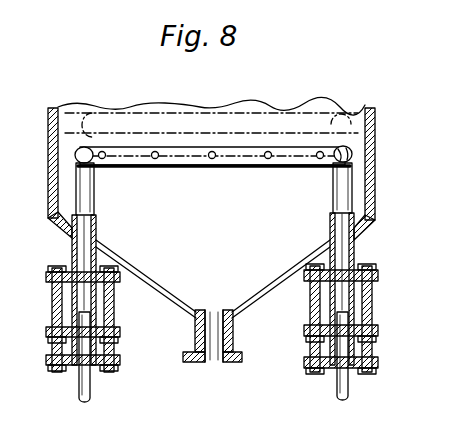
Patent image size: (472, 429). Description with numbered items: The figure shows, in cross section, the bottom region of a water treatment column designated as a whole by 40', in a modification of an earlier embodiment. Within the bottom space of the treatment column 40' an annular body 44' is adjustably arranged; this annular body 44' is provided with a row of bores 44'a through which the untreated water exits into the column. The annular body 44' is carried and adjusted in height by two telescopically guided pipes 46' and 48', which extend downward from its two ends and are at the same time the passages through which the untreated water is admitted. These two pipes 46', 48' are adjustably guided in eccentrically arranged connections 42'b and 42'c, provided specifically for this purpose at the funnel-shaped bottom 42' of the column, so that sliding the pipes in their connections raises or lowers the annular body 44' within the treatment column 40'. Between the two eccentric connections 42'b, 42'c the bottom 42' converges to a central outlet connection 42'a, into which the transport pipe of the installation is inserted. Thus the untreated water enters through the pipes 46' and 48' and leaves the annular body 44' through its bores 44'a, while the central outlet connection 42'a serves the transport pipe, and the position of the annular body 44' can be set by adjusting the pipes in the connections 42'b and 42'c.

The treatment column 40' is at (211, 141).
The annular body 44' is at (213, 116).
The bores 44'a is at (211, 114).
The telescopically guided pipe 46' is at (122, 198).
The telescopically guided pipe 48' is at (310, 191).
The bottom of the treatment column 42' is at (213, 293).
The central outlet connection 42'a is at (192, 354).
The eccentrically arranged connection 42'b is at (364, 306).
The eccentrically arranged connection 42'c is at (75, 308).